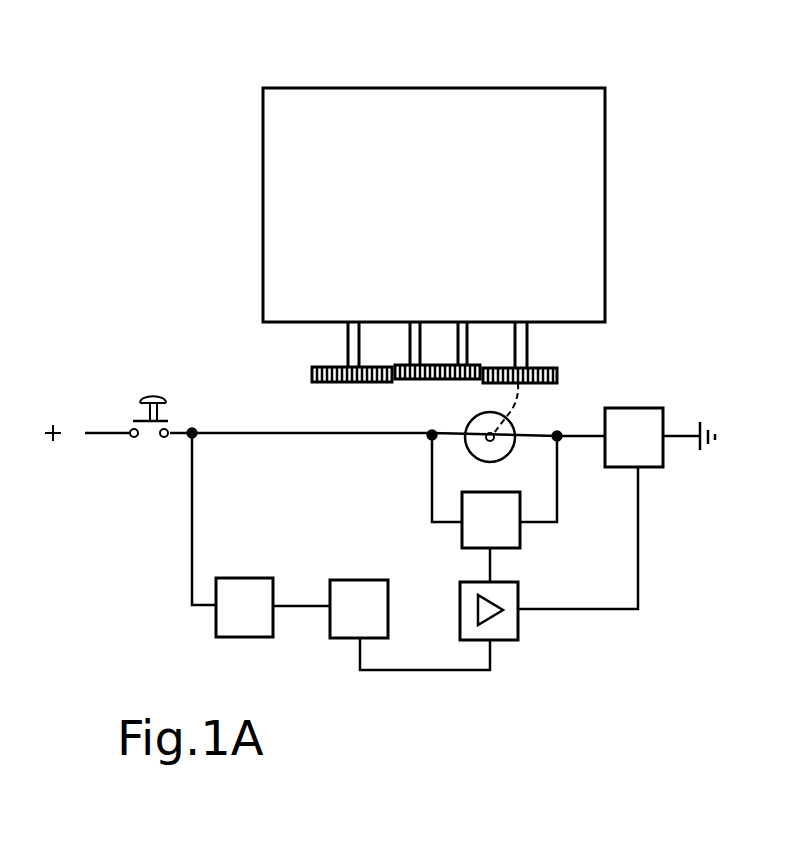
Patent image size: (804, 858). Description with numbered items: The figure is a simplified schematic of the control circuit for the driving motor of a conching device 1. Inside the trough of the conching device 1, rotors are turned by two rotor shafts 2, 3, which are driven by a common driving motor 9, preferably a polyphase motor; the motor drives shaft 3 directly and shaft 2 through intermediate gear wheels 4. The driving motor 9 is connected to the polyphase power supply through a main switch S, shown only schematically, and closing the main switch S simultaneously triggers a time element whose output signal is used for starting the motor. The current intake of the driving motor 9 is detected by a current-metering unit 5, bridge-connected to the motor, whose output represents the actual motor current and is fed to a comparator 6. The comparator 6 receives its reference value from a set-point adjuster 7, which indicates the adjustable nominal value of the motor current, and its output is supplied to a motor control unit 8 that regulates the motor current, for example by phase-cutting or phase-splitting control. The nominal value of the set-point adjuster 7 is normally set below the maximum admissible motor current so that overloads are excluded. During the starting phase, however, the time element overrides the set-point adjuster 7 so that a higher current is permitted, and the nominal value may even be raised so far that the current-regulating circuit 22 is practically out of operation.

The conching device 1 is at (434, 203).
The rotor shaft 2 is at (345, 343).
The rotor shaft 3 is at (530, 343).
The intermediate gear wheels 4 is at (450, 378).
The current-metering unit 5 is at (496, 532).
The comparator 6 is at (520, 630).
The set-point adjuster 7 is at (359, 609).
The motor control unit 8 is at (642, 452).
The driving motor 9 is at (471, 422).
The current-regulating circuit 22 is at (341, 570).
The main switch S is at (140, 412).